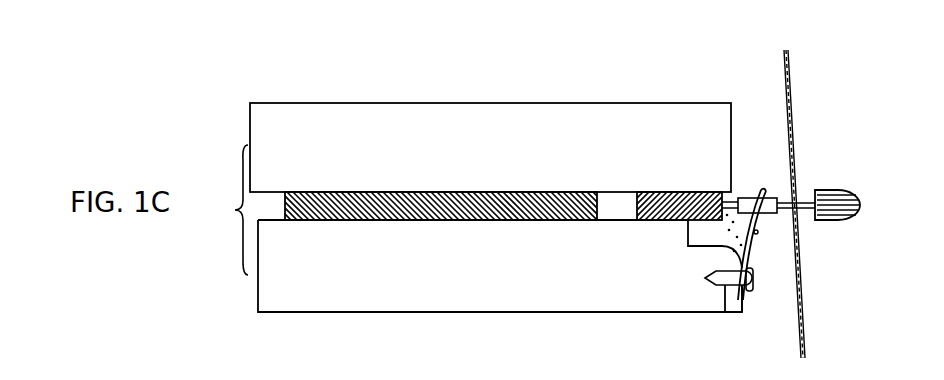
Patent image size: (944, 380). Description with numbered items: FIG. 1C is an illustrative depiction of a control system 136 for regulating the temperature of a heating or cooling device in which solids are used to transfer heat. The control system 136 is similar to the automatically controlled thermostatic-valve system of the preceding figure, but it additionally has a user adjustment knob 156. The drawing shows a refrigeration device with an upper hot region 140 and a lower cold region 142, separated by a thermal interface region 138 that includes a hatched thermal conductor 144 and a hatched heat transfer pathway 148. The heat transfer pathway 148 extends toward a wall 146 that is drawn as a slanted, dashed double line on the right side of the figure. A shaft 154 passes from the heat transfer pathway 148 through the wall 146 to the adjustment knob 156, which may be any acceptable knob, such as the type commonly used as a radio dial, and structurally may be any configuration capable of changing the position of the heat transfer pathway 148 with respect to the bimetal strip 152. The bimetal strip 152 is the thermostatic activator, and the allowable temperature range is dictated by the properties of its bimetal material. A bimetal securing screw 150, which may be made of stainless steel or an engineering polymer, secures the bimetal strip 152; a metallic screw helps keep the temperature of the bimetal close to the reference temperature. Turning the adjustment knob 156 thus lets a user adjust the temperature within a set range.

The control system 136 is at (364, 79).
The thermal interface / gap region 138 is at (222, 208).
The hot region 140 is at (541, 101).
The cold region 142 is at (555, 300).
The fixed thermal conductor 144 is at (580, 192).
The housing wall 146 is at (823, 173).
The heat transfer pathway 148 is at (657, 223).
The bimetal securing screw 150 is at (725, 313).
The bimetal strip 152 is at (754, 232).
The actuating shaft 154 is at (780, 193).
The user adjustment knob 156 is at (853, 222).